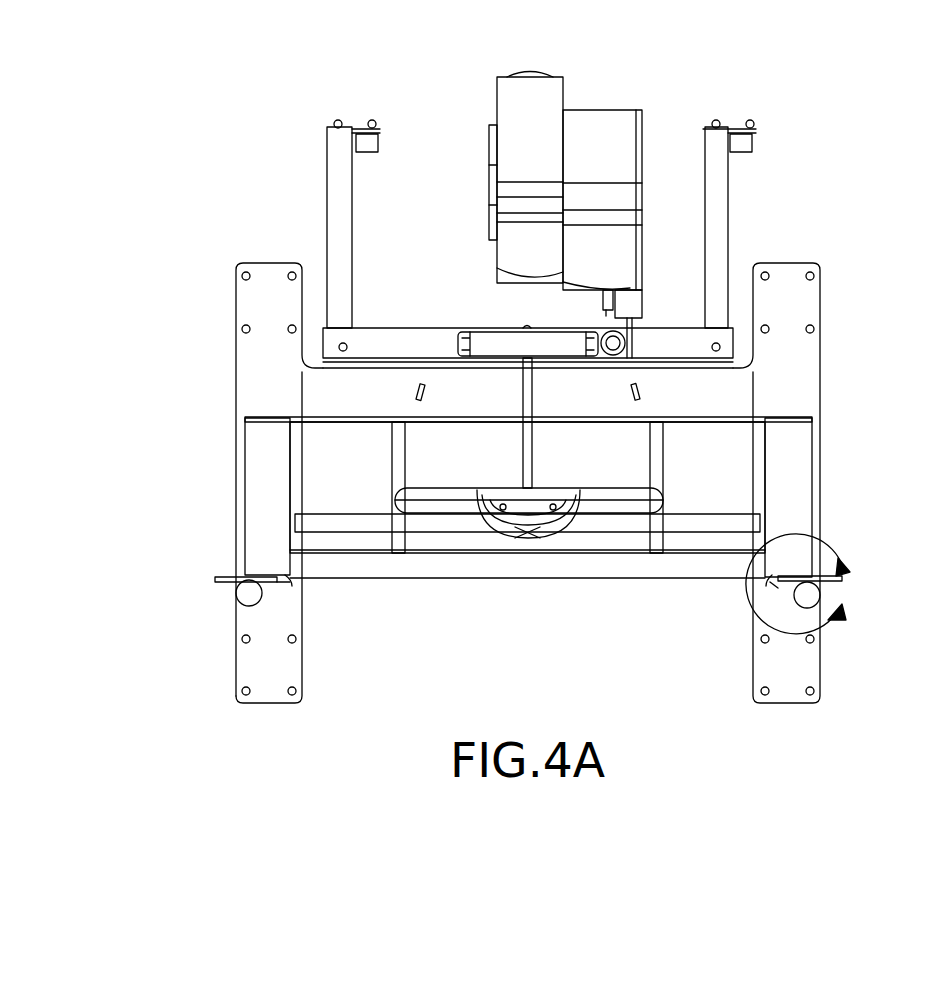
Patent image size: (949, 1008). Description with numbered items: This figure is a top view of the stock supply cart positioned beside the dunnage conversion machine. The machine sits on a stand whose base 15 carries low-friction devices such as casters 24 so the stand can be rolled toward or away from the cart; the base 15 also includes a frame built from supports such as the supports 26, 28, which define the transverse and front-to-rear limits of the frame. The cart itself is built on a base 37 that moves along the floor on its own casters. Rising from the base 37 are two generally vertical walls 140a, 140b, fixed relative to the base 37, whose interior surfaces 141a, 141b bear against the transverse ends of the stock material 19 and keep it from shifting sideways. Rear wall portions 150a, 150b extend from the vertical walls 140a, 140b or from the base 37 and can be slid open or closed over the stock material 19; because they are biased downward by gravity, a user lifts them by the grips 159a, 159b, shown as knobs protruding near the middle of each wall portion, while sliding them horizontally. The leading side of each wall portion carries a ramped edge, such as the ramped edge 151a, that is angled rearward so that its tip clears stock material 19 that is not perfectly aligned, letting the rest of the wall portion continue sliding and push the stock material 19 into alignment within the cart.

The base 15 is at (388, 341).
The stock material 19 is at (306, 462).
The casters 24 is at (360, 128).
The left post 26 is at (338, 193).
The support 28 is at (718, 199).
The base 37 is at (808, 672).
The vertical wall 140a is at (270, 490).
The vertical wall 140b is at (785, 490).
The interior surface 141a is at (290, 568).
The interior surface 141b is at (767, 567).
The rear wall portion 150a is at (215, 580).
The rear wall portion 150b is at (845, 578).
The ramped edge 151a is at (283, 582).
The grip 159a is at (250, 594).
The grip 159b is at (812, 596).